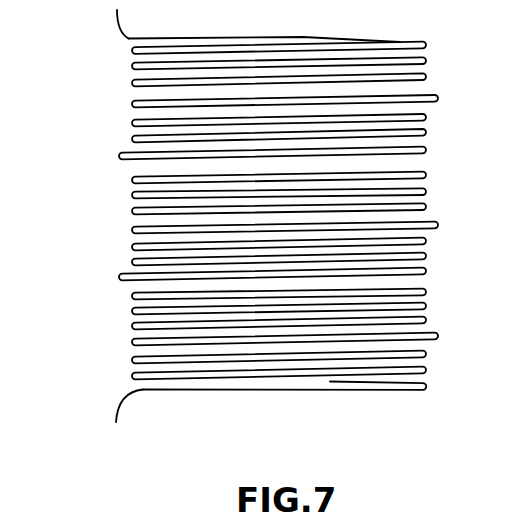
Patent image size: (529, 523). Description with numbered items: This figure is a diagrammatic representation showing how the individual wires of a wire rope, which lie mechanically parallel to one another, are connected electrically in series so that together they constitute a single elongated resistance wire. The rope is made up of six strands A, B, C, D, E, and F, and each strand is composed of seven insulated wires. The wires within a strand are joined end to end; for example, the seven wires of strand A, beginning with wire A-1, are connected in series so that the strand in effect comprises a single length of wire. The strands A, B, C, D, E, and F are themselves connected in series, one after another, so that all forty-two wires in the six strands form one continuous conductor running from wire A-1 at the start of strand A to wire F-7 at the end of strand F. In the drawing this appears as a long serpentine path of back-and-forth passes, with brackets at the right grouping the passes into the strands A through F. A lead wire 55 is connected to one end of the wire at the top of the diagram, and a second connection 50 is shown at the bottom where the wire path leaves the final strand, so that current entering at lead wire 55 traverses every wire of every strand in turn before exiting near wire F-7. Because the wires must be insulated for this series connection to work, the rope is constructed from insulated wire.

The lead wire 55 is at (121, 36).
The wire of strand A A-1 is at (303, 38).
The outlet of serpentine tube 50 is at (122, 404).
The wire of strand F F-7 is at (288, 393).
The strand A is at (304, 55).
The strand B is at (446, 98).
The strand C is at (446, 163).
The strand D is at (446, 220).
The strand E is at (446, 282).
The strand F is at (304, 385).